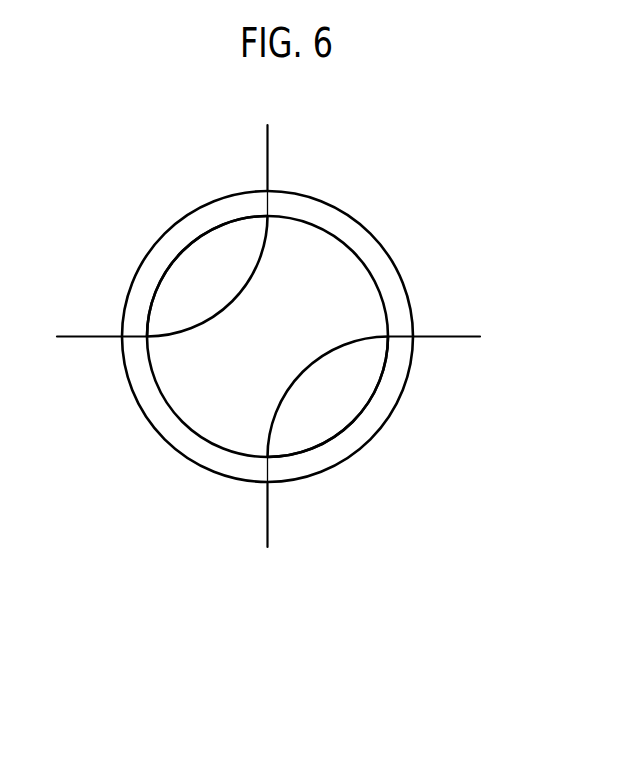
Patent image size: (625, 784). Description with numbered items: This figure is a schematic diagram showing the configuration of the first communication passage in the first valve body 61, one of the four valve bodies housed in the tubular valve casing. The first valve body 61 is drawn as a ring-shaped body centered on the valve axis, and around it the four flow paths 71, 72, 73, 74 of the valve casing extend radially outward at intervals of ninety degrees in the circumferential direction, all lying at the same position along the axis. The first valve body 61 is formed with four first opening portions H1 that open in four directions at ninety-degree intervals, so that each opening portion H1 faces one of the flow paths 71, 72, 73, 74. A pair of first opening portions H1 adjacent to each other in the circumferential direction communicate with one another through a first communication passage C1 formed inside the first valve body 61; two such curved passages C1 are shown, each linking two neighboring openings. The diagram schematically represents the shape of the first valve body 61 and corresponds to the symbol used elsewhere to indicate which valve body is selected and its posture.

The first valve body 61 is at (342, 277).
The flow path 71 is at (268, 143).
The flow path 72 is at (268, 534).
The flow path 73 is at (465, 338).
The flow path 74 is at (68, 338).
The first opening portion H1 is at (268, 216).
The first communication passage C1 is at (247, 283).